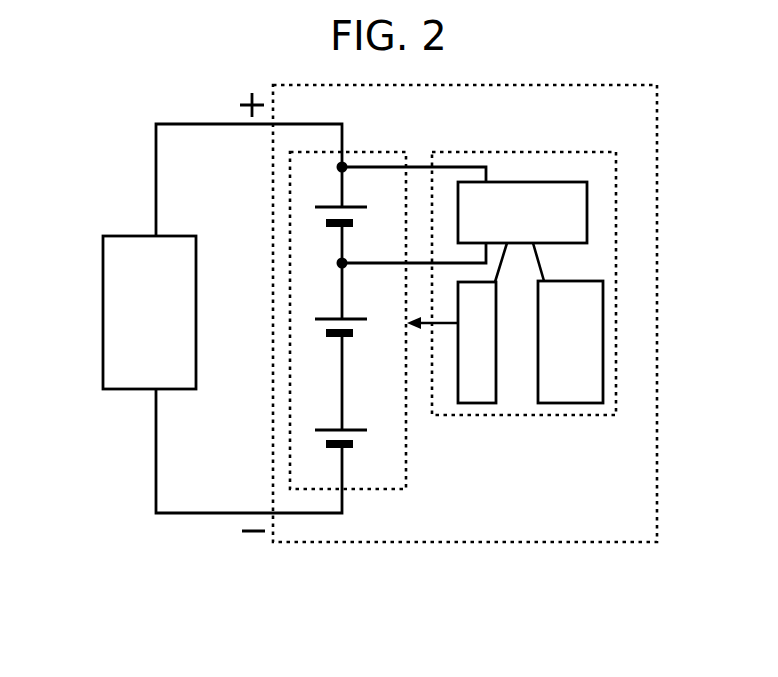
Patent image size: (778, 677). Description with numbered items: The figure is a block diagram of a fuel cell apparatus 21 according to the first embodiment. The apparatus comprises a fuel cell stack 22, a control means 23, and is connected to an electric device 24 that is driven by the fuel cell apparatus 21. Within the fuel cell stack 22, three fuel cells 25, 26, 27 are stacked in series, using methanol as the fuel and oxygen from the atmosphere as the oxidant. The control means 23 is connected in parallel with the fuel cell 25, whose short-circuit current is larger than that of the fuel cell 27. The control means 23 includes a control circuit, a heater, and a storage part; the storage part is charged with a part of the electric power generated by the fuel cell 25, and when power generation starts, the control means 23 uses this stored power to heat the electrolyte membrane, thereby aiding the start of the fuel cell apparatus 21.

The fuel cell apparatus 21 is at (590, 542).
The fuel cell stack 22 is at (385, 489).
The control means 23 is at (616, 218).
The electric device 24 is at (132, 236).
The fuel cell 25 is at (357, 214).
The fuel cell 26 is at (357, 326).
The fuel cell 27 is at (357, 437).